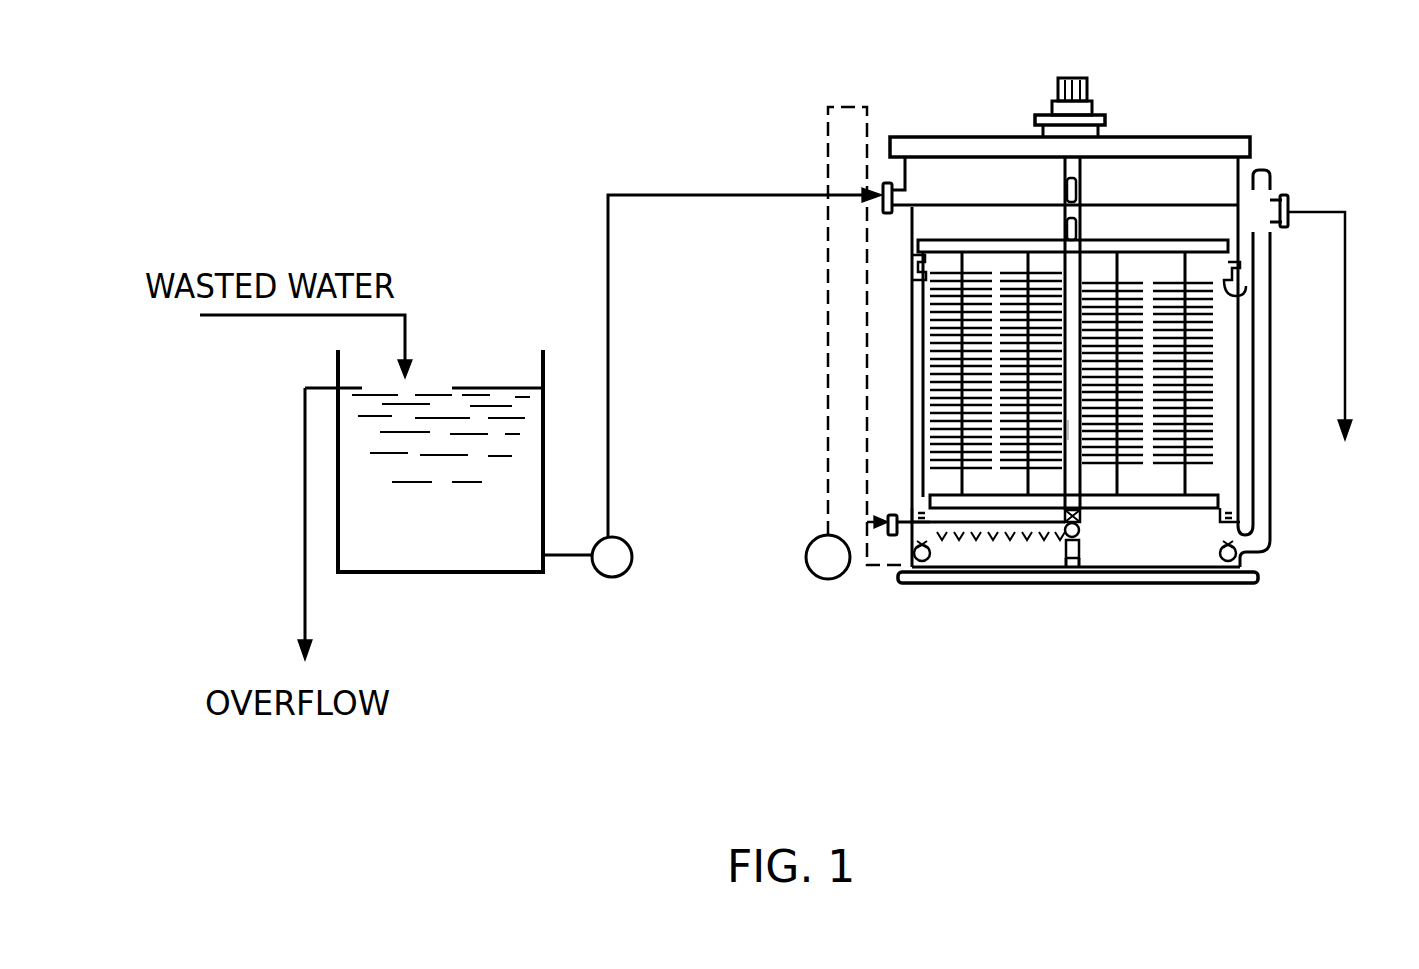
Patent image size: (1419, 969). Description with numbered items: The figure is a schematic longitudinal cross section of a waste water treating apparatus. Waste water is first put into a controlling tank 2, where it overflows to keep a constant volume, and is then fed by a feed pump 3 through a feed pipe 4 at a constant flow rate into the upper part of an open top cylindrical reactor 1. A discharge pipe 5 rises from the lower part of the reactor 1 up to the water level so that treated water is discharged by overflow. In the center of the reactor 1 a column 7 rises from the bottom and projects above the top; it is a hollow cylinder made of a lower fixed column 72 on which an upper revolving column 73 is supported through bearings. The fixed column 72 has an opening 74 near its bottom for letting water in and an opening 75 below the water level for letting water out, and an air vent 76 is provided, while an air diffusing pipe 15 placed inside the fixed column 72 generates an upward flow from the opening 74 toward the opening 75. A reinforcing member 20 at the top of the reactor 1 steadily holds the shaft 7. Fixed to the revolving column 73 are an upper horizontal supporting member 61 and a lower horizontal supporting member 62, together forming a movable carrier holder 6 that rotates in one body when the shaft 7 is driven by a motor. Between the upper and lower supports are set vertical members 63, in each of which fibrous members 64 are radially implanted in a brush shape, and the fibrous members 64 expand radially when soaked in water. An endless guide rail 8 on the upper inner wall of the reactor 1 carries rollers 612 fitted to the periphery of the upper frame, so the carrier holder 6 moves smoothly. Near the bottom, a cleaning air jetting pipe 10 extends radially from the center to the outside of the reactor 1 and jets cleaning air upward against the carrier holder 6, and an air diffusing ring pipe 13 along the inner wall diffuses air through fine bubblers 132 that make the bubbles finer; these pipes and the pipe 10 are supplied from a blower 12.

The reactor 1 is at (890, 395).
The controlling tank 2 is at (475, 576).
The feed pump 3 is at (630, 575).
The feed pipe 4 is at (608, 272).
The discharge pipe 5 is at (1262, 337).
The movable carrier holder 6 is at (1010, 222).
The column 7 is at (1080, 193).
The endless guide rail 8 is at (912, 272).
The cleaning air jetting pipe 10 is at (902, 535).
The blower 12 is at (808, 547).
The air diffusing ring pipe 13 is at (913, 583).
The air diffusing pipe 15 is at (1088, 535).
The reinforcing member 20 is at (935, 146).
The upper horizontal supporting member 61 is at (1143, 242).
The lower horizontal supporting member 62 is at (1168, 510).
The vertical member 63 is at (1190, 367).
The fibrous member 64 is at (1197, 447).
The lower fixed column 72 is at (1063, 533).
The upper revolving column 73 is at (1075, 430).
The opening 74 is at (1065, 560).
The opening 75 is at (1066, 180).
The air vent 76 is at (1066, 214).
The fine bubbler 132 is at (1242, 520).
The roller 612 is at (913, 258).